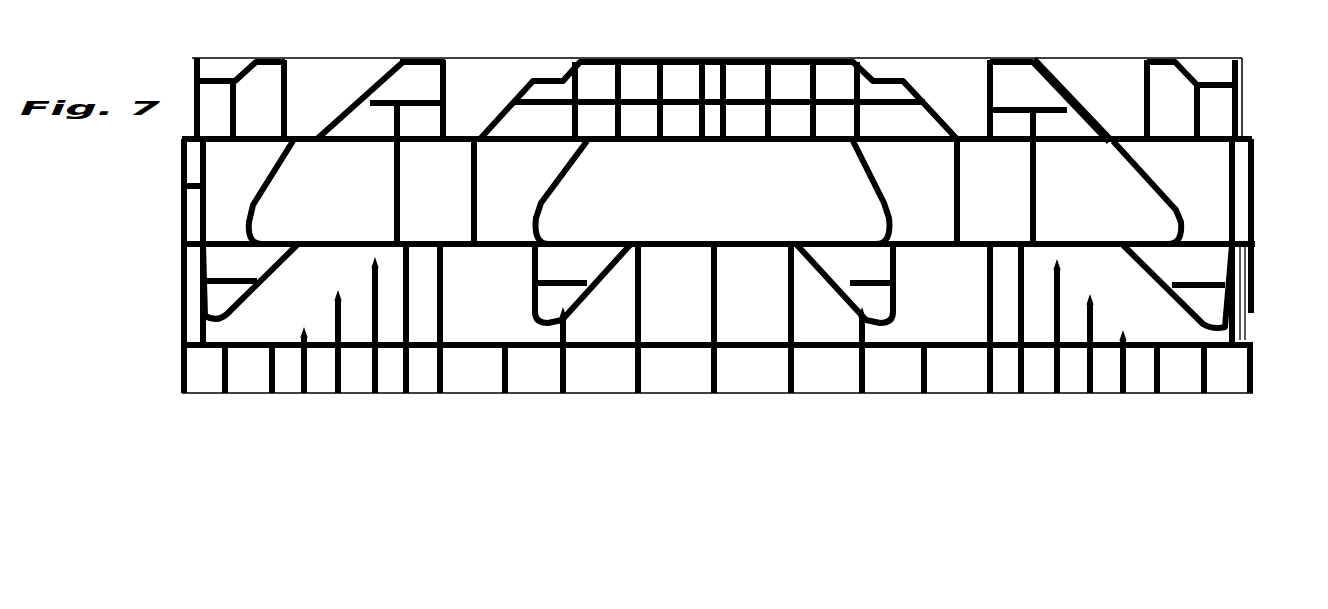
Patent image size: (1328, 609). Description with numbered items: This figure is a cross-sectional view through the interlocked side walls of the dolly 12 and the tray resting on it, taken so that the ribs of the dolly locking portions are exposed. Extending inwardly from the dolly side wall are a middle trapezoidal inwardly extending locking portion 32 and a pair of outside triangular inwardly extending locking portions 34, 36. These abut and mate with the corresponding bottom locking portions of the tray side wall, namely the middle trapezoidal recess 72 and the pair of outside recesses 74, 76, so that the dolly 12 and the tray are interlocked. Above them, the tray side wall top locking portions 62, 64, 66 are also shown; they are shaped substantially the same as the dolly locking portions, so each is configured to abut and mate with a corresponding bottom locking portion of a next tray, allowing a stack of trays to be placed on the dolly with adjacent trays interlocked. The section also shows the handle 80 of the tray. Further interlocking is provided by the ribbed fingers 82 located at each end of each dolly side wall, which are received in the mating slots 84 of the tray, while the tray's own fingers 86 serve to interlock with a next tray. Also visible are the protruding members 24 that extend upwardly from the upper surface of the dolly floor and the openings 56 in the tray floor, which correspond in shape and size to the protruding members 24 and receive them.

The dolly 12 is at (683, 69).
The openings 56 is at (304, 1).
The protruding members 24 is at (470, 0).
The inwardly extending locking portion 64 is at (377, 72).
The inwardly extending locking portion 62 is at (573, 64).
The handle 80 is at (733, 173).
The inwardly extending locking portion 66 is at (1070, 91).
The fingers 86 is at (1243, 107).
The mating slots 84 is at (1253, 277).
The ribbed fingers 82 is at (1242, 338).
The outside recess 74 is at (291, 266).
The outside triangular inwardly extending locking portion 34 is at (378, 328).
The middle trapezoidal recess 72 is at (668, 248).
The middle trapezoidal inwardly extending locking portion 32 is at (797, 322).
The outside triangular inwardly extending locking portion 36 is at (1052, 338).
The outside recess 76 is at (1157, 278).